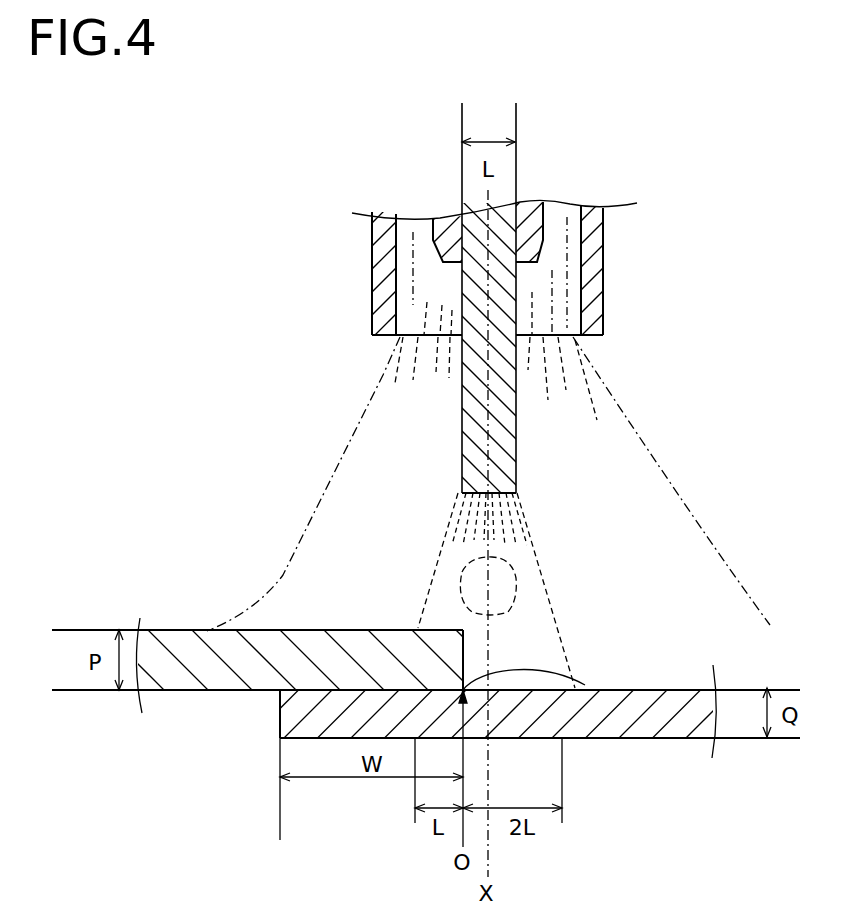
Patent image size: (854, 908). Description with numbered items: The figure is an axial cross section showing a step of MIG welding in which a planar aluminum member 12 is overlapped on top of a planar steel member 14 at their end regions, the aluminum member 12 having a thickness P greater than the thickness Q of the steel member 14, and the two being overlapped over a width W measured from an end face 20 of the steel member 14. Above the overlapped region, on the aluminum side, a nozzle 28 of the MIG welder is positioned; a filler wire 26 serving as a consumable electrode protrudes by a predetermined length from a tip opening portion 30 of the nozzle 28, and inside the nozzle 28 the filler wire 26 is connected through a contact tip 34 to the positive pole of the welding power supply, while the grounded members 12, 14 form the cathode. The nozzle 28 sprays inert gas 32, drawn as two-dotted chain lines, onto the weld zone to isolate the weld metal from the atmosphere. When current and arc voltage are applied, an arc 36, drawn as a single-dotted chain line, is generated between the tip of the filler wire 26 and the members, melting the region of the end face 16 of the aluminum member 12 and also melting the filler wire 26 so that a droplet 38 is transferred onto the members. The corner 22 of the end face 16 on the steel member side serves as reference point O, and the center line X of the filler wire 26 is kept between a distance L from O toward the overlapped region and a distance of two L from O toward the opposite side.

The aluminum member 12 is at (175, 612).
The steel member 14 is at (670, 758).
The end face of the aluminum member 16 is at (466, 668).
The end face of the steel member 20 is at (280, 720).
The corner of the end face 22 is at (585, 685).
The filler wire 26 is at (500, 422).
The nozzle 28 is at (620, 272).
The tip opening portion 30 is at (576, 333).
The inert gas 32 is at (385, 375).
The contact tip 34 is at (443, 230).
The arc 36 is at (448, 520).
The droplet 38 is at (493, 592).